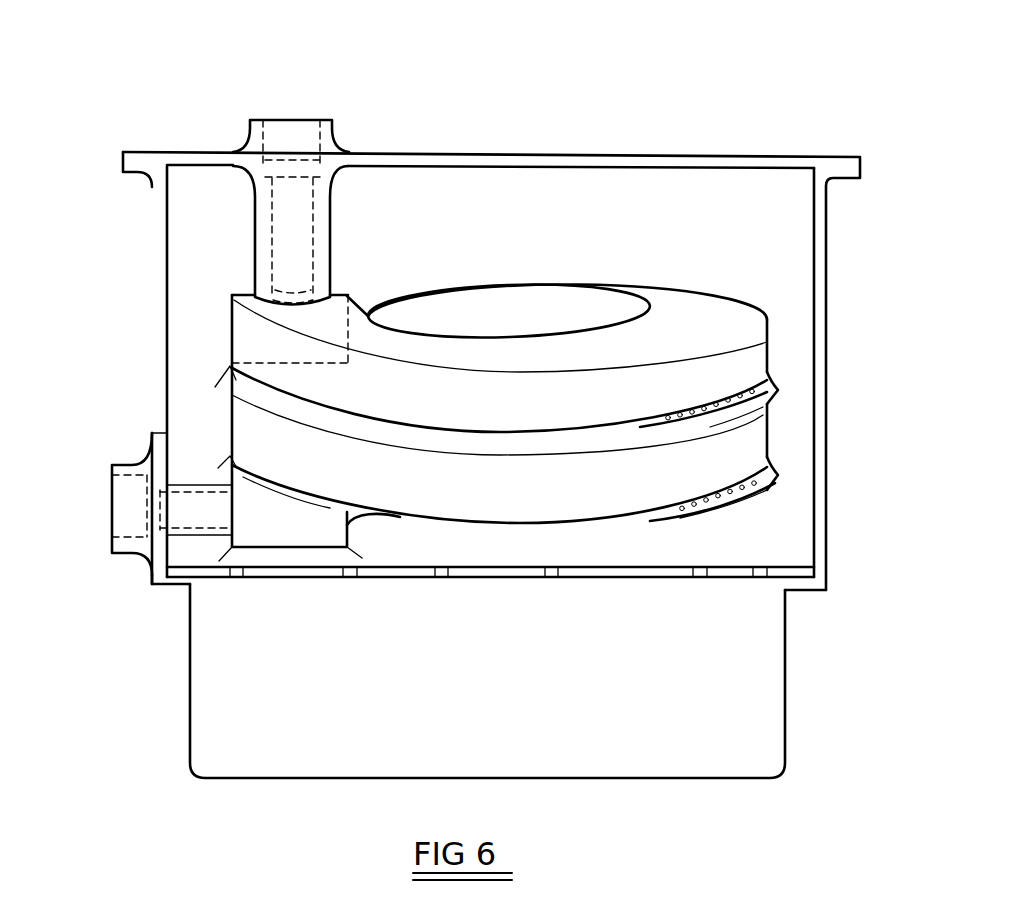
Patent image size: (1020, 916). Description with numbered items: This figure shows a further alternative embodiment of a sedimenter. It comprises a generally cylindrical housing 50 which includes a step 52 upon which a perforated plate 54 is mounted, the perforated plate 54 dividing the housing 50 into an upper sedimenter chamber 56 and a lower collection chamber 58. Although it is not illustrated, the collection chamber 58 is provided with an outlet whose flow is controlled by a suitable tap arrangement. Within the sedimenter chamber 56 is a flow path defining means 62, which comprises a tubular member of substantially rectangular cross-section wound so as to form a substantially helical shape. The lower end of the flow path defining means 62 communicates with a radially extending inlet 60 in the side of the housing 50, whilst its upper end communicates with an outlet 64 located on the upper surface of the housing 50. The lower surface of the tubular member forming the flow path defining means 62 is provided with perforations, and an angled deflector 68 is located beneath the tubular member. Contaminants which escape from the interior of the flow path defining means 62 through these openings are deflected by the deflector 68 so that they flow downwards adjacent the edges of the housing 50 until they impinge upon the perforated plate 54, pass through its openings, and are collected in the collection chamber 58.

The housing 50 is at (828, 312).
The step 52 is at (170, 592).
The perforated plate 54 is at (727, 577).
The sedimenter chamber 56 is at (659, 221).
The collection chamber 58 is at (487, 681).
The inlet 60 is at (135, 462).
The flow path defining means 62 is at (755, 442).
The outlet 64 is at (252, 140).
The deflector 68 is at (228, 455).